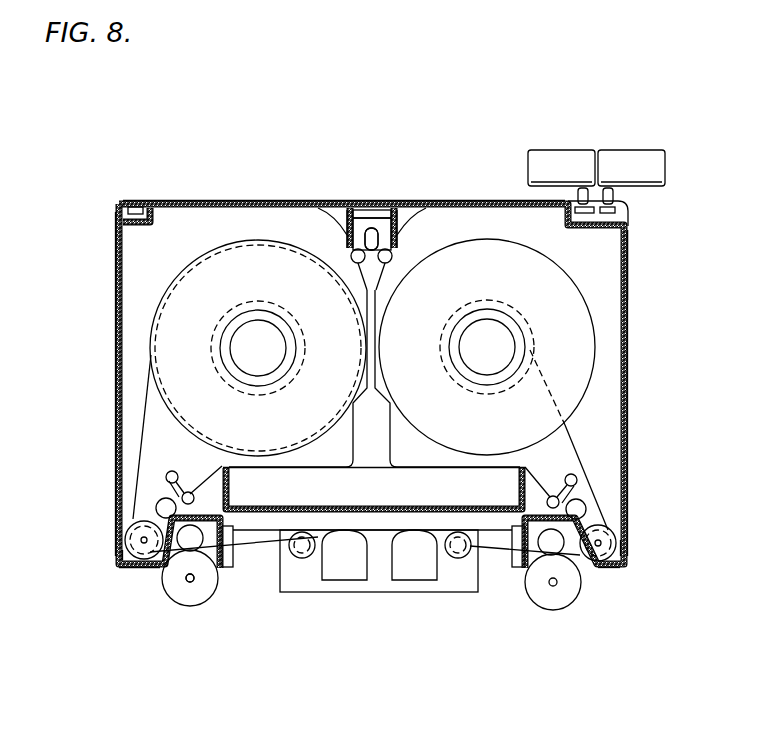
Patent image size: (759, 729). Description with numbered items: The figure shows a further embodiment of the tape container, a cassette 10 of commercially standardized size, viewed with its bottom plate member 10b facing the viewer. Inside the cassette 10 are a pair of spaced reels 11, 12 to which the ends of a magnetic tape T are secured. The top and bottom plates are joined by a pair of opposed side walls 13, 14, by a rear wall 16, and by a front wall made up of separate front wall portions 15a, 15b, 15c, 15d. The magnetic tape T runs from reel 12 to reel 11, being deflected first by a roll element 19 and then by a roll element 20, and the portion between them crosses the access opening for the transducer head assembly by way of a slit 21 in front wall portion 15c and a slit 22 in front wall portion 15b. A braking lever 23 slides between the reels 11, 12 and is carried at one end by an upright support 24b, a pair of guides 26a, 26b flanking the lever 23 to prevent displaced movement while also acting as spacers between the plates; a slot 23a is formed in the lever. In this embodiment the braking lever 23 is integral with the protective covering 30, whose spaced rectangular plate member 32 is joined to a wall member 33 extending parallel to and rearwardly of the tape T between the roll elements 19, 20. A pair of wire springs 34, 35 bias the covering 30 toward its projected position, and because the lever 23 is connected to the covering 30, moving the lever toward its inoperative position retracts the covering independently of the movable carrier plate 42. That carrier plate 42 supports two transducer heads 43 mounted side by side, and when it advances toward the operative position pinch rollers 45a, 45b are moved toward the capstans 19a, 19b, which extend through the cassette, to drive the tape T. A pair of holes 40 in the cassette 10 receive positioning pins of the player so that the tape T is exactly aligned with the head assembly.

The cassette 10 is at (635, 258).
The bottom plate member 10b is at (608, 282).
The reel 11 is at (577, 328).
The reel 12 is at (152, 308).
The side wall 13 is at (620, 383).
The side wall 14 is at (115, 347).
The front wall portion 15a is at (600, 570).
The front wall portion 15b is at (605, 528).
The front wall portion 15c is at (132, 527).
The front wall portion 15d is at (140, 565).
The rear wall 16 is at (217, 200).
The roll element 19 is at (132, 556).
The capstan 19a is at (552, 548).
The capstan 19b is at (186, 548).
The roll element 20 is at (617, 547).
The slit 21 is at (223, 565).
The slit 22 is at (515, 558).
The braking lever 23 is at (377, 298).
The slot 23a is at (370, 212).
The upright support 24b is at (384, 212).
The guide 26a is at (345, 228).
The guide 26b is at (398, 228).
The protective covering 30 is at (277, 487).
The plate member 32 is at (232, 530).
The wall member 33 is at (337, 505).
The wire spring 34 is at (172, 488).
The wire spring 35 is at (572, 488).
The holes 40 is at (156, 503).
The movable carrier plate 42 is at (388, 532).
The transducer heads 43 is at (337, 580).
The pinch roller 45a is at (560, 607).
The pinch roller 45b is at (183, 607).
The magnetic tape T is at (380, 532).